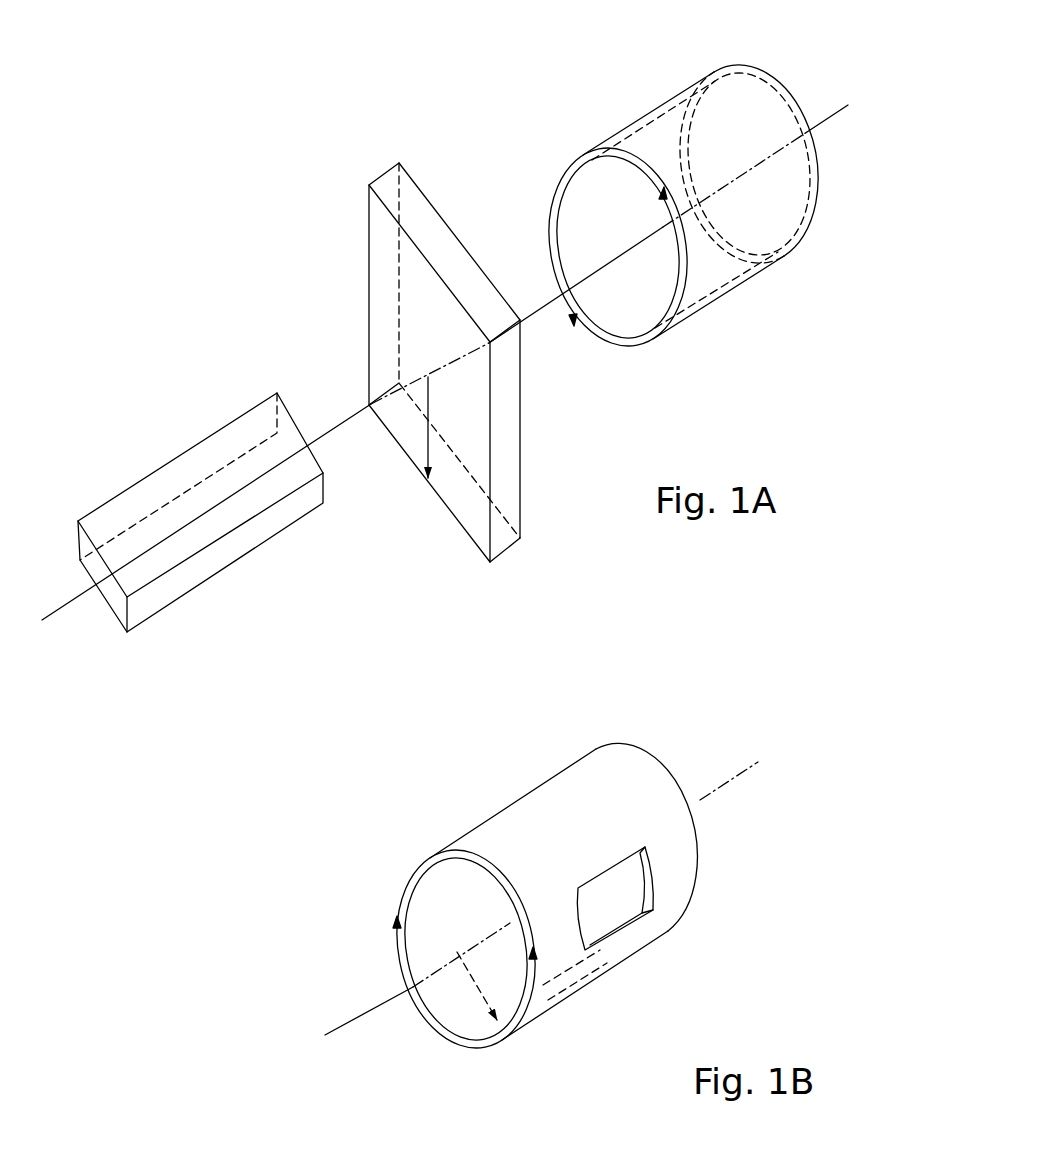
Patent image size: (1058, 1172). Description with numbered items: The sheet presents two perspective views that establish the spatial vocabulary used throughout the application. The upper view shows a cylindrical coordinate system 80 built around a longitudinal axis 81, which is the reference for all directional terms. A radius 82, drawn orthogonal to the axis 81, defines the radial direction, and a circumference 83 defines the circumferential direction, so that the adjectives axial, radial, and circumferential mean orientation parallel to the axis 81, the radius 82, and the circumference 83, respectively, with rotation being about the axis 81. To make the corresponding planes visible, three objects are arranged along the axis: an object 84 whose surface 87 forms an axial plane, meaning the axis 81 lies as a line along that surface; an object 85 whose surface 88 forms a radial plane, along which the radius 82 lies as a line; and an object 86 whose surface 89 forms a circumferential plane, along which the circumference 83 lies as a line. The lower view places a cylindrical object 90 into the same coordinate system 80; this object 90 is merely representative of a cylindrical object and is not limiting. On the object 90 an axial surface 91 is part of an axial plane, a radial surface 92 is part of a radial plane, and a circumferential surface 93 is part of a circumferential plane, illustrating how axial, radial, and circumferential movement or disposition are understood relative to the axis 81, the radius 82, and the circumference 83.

In FIG. 1A, the cylindrical coordinate system 80 is at (295, 205).
In FIG. 1B, the cylindrical coordinate system 80 is at (688, 733).
In FIG. 1A, the longitudinal axis 81 is at (657, 210).
In FIG. 1B, the longitudinal axis 81 is at (521, 889).
In FIG. 1A, the radius 82 is at (428, 440).
In FIG. 1B, the radius 82 is at (480, 987).
In FIG. 1A, the circumference 83 is at (545, 233).
In FIG. 1B, the circumference 83 is at (437, 977).
In FIG. 1A, the object 84 is at (157, 622).
In FIG. 1A, the object 85 is at (530, 545).
In FIG. 1A, the object 86 is at (702, 317).
In FIG. 1A, the surface 87 is at (192, 538).
In FIG. 1A, the surface 88 is at (380, 297).
In FIG. 1A, the surface 89 is at (652, 112).
In FIG. 1B, the cylindrical object 90 is at (563, 851).
In FIG. 1B, the axial surface 91 is at (620, 923).
In FIG. 1B, the radial surface 92 is at (445, 1032).
In FIG. 1B, the circumferential surface 93 is at (547, 807).